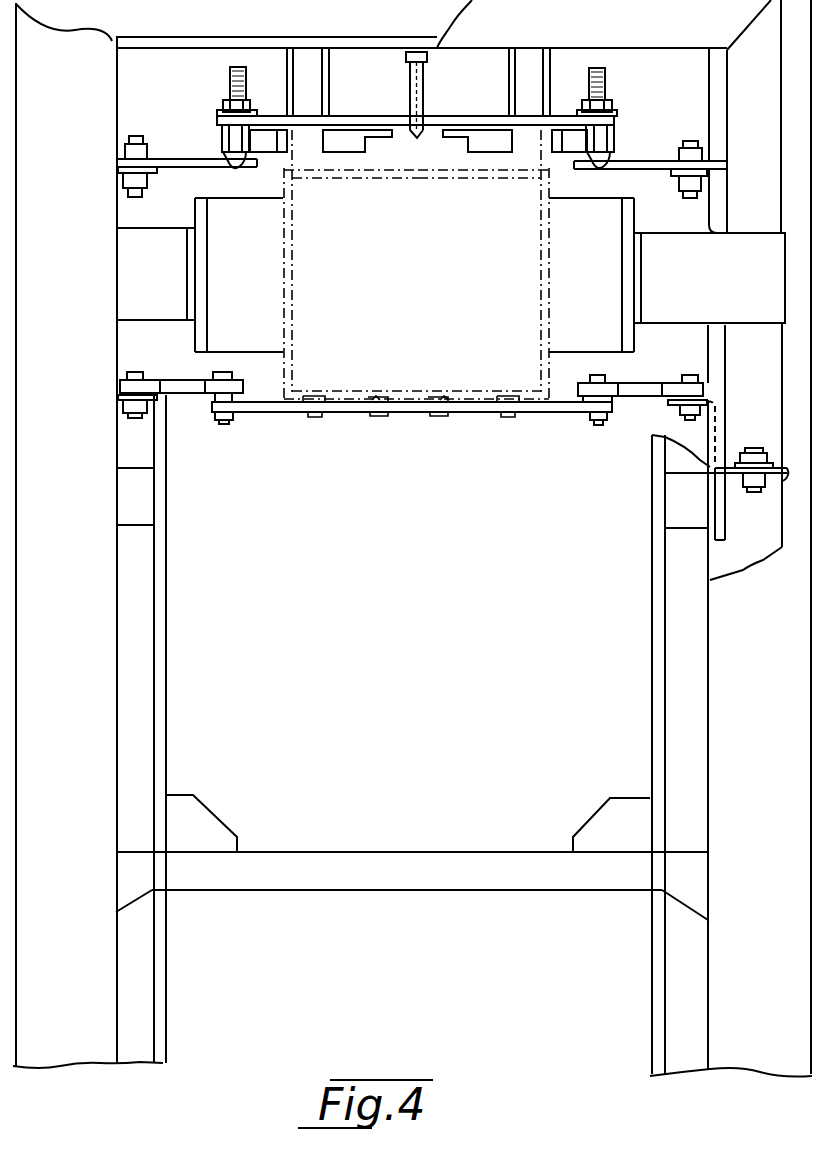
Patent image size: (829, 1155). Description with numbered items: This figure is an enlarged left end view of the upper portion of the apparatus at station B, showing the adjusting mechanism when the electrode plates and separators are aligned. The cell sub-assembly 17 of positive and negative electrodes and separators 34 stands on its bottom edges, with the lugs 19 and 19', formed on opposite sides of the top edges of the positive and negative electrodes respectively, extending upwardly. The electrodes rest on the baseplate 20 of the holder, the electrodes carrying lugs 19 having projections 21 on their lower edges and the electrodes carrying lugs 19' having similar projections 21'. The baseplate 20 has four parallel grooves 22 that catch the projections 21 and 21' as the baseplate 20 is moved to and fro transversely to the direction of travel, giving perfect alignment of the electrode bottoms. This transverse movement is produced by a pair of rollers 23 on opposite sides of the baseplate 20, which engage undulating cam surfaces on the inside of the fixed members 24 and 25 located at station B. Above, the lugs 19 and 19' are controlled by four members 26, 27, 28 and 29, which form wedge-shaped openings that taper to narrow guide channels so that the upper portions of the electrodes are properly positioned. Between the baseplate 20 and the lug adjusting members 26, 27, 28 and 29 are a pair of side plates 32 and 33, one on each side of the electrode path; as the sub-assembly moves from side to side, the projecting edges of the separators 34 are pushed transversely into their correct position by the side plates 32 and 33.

The cell sub-assembly 17 is at (417, 378).
The lugs 19 is at (351, 264).
The lugs 19' is at (483, 186).
The baseplate 20 is at (251, 412).
The projections 21 is at (383, 426).
The projections 21' is at (418, 431).
The grooves 22 is at (304, 405).
The rollers 23 is at (234, 392).
The fixed member 24 is at (167, 380).
The fixed member 25 is at (643, 383).
The lug adjusting member 26 is at (265, 143).
The lug adjusting member 27 is at (355, 147).
The lug adjusting member 28 is at (462, 144).
The lug adjusting member 29 is at (556, 158).
The side plate 32 is at (212, 207).
The side plate 33 is at (602, 207).
The separators 34 is at (550, 264).